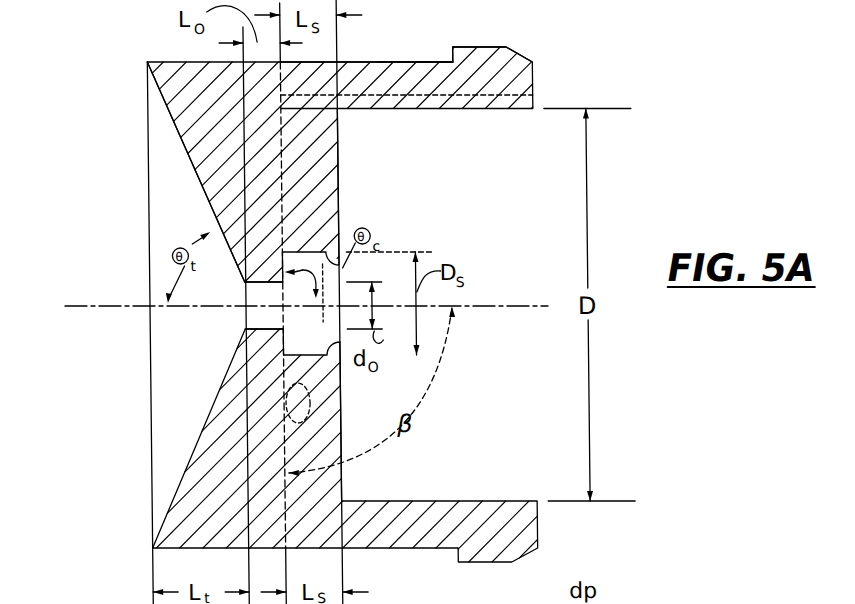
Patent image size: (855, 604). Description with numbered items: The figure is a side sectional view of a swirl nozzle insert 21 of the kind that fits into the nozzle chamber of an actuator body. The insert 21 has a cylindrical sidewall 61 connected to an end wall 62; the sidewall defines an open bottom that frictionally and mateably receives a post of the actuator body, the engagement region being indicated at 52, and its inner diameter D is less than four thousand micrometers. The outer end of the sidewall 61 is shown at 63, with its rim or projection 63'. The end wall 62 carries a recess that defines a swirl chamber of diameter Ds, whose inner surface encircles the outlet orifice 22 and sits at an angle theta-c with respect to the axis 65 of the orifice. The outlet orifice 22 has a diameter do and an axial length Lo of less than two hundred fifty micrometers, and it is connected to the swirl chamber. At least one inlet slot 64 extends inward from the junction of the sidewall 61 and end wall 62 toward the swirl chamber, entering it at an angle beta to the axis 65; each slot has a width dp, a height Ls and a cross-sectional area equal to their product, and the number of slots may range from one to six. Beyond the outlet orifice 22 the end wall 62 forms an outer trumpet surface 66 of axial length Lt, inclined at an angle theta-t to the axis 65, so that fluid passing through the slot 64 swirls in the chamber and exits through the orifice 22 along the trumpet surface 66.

The nozzle body 21 is at (100, 209).
The orifice throat 22 is at (245, 327).
The threads 52 is at (470, 109).
The flange portion 61 is at (400, 70).
The body wall 62 is at (200, 118).
The flange 63 is at (415, 100).
The flange projection 63' is at (525, 50).
The transition edge 64 is at (284, 436).
The central axis 65 is at (100, 307).
The conical inlet surface 66 is at (184, 142).